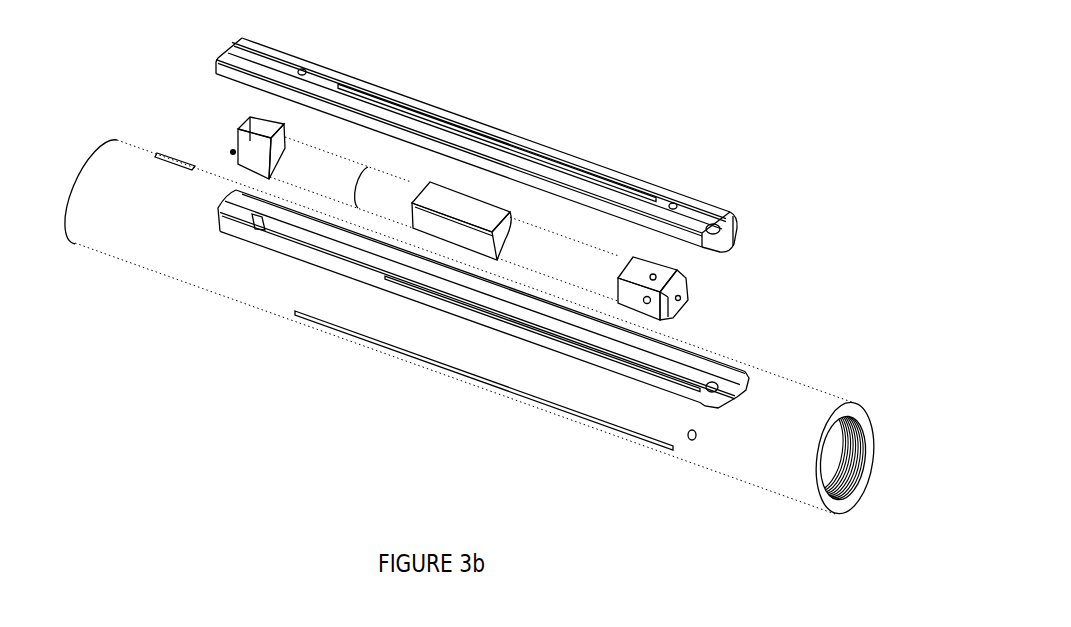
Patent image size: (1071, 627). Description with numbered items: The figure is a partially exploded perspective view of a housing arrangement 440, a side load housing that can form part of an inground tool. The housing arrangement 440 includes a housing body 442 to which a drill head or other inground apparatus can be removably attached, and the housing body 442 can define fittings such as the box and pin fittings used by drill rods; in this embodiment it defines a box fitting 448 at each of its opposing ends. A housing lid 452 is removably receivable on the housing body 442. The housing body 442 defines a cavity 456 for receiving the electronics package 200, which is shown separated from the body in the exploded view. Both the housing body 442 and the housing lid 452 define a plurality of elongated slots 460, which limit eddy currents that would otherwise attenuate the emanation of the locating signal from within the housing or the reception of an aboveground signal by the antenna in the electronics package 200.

The housing arrangement 440 is at (685, 86).
The housing body 442 is at (768, 372).
The box fitting 448 is at (73, 238).
The housing lid 452 is at (660, 185).
The cavity 456 is at (272, 225).
The elongated slots 460 is at (472, 130).
The electronics package 200 is at (690, 297).